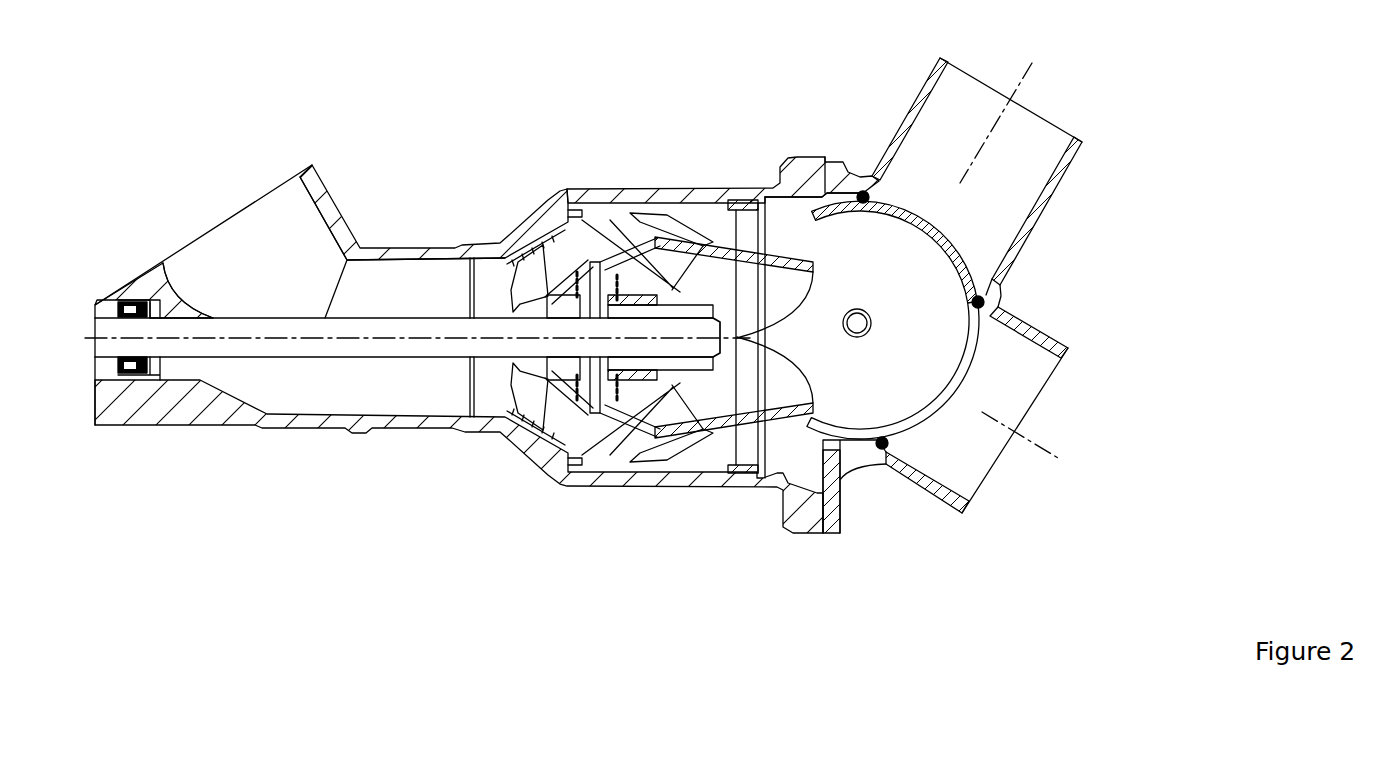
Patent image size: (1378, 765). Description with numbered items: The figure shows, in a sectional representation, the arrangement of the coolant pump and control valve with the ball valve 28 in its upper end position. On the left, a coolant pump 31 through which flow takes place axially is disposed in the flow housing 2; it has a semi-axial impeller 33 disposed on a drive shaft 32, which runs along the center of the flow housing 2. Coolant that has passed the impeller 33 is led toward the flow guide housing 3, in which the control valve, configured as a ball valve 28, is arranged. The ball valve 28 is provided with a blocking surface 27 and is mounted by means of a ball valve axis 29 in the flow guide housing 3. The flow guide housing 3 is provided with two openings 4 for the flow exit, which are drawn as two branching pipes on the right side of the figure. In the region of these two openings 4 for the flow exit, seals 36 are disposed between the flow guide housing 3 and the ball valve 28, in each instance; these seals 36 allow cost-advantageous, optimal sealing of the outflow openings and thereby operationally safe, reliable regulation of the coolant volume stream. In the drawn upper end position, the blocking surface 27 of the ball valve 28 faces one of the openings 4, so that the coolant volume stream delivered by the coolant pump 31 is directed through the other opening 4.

The flow housing 2 is at (172, 425).
The flow guide housing 3 is at (1008, 267).
The openings for the flow exit 4 is at (1015, 103).
The blocking surface 27 is at (953, 248).
The ball valve 28 is at (947, 402).
The ball valve axis 29 is at (852, 310).
The coolant pump 31 is at (652, 217).
The drive shaft 32 is at (370, 340).
The semi-axial impeller 33 is at (560, 395).
The seals 36 is at (862, 192).